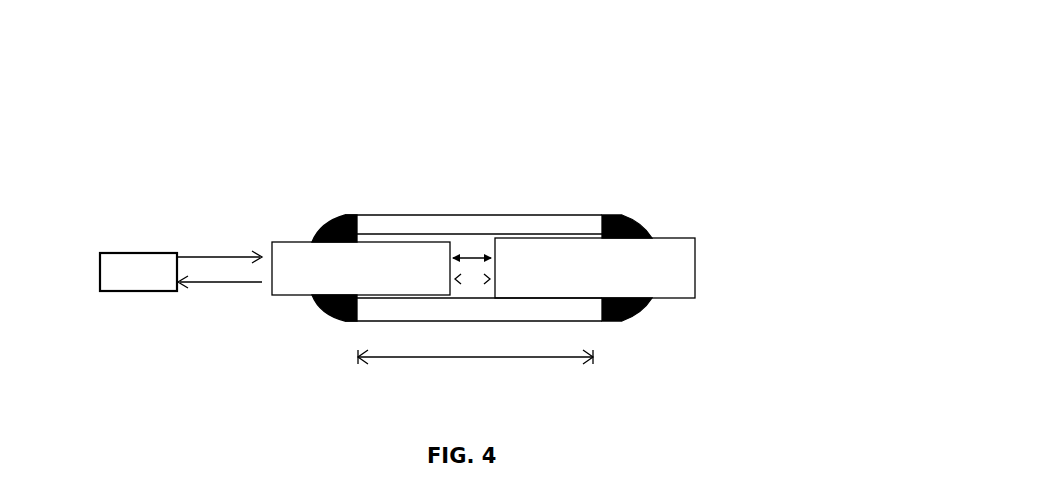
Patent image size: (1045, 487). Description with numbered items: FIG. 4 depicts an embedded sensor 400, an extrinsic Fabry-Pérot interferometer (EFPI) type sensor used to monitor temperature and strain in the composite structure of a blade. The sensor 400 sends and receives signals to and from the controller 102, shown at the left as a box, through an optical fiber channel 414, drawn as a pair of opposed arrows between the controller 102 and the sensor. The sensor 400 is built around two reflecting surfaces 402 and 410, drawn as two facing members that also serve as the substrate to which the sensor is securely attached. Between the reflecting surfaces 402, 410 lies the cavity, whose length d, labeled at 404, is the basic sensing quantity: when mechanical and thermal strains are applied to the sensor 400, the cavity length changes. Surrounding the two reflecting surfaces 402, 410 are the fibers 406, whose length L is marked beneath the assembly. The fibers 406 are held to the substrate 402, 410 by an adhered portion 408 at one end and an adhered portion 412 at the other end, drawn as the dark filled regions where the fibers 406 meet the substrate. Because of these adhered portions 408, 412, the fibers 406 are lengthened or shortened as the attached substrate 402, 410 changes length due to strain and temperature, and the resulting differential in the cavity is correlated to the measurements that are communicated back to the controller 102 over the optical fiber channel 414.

The embedded sensor 400 is at (738, 64).
The reflecting surface 402 is at (285, 240).
The gap between fiber ends 404 is at (465, 247).
The fibers 406 is at (545, 207).
The adhered portion 408 is at (636, 222).
The reflecting surface 410 is at (667, 301).
The adhered portion 412 is at (333, 317).
The optical fiber channel 414 is at (220, 269).
The controller 102 is at (108, 298).